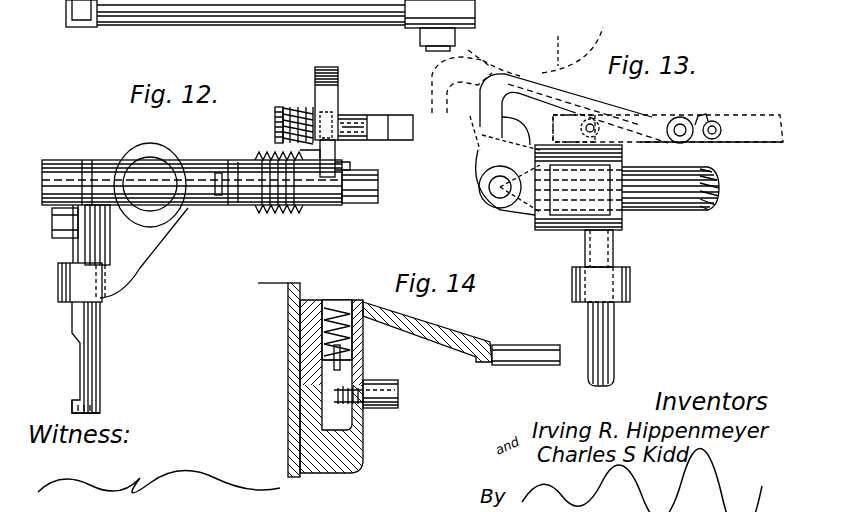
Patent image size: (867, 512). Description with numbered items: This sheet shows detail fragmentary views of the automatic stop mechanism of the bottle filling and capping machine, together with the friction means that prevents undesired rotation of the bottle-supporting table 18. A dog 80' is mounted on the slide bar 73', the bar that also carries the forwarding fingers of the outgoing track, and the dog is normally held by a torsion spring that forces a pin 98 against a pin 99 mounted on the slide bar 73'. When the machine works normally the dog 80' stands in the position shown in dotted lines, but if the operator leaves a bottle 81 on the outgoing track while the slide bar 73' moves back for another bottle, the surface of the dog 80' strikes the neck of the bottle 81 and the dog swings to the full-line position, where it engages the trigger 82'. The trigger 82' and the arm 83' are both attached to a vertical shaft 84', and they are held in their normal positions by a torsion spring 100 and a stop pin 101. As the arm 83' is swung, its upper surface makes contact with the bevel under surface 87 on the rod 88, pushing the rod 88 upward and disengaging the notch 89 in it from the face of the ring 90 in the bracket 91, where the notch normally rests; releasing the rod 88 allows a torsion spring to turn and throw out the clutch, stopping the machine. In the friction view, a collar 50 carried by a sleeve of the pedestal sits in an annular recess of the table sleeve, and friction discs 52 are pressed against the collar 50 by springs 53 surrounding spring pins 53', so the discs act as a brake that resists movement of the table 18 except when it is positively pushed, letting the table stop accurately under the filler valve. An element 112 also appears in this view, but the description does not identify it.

In FIG. 12, the bevel under surface 87 is at (80, 170).
In FIG. 12, the vertical shaft 84′ is at (376, 205).
In FIG. 13, the vertical shaft 84′ is at (496, 193).
In FIG. 12, the torsion spring 100 is at (283, 213).
In FIG. 12, the stop pin 101 is at (222, 208).
In FIG. 12, the dog 80′ is at (337, 78).
In FIG. 13, the dog 80′ is at (540, 74).
In FIG. 12, the trigger 82′ is at (336, 157).
In FIG. 13, the trigger 82′ is at (478, 160).
In FIG. 12, the bracket 91 is at (293, 118).
In FIG. 13, the bracket 91 is at (612, 243).
In FIG. 12, the arm 83′ is at (60, 238).
In FIG. 13, the arm 83′ is at (620, 210).
In FIG. 12, the rod 88 is at (100, 325).
In FIG. 13, the rod 88 is at (614, 328).
In FIG. 12, the ring 90 is at (58, 283).
In FIG. 13, the ring 90 is at (574, 283).
In FIG. 12, the notch 89 is at (75, 400).
In FIG. 13, the bottle 81 is at (535, 47).
In FIG. 13, the slide bar 73′ is at (663, 112).
In FIG. 13, the pin 98 is at (690, 141).
In FIG. 13, the pin 99 is at (716, 134).
In FIG. 14, the plate 112 is at (292, 392).
In FIG. 14, the collar 50 is at (336, 302).
In FIG. 14, the friction discs 52 is at (352, 300).
In FIG. 14, the springs 53 is at (358, 343).
In FIG. 14, the spring pins 53′ is at (322, 353).
In FIG. 14, the table 18 is at (458, 338).